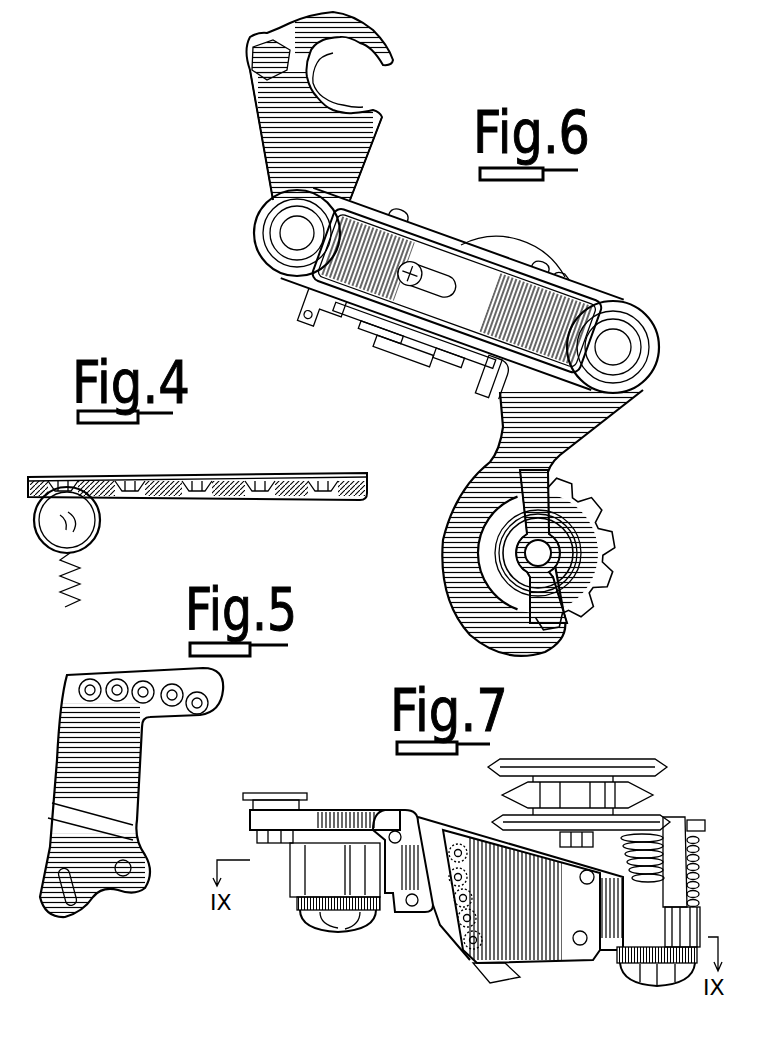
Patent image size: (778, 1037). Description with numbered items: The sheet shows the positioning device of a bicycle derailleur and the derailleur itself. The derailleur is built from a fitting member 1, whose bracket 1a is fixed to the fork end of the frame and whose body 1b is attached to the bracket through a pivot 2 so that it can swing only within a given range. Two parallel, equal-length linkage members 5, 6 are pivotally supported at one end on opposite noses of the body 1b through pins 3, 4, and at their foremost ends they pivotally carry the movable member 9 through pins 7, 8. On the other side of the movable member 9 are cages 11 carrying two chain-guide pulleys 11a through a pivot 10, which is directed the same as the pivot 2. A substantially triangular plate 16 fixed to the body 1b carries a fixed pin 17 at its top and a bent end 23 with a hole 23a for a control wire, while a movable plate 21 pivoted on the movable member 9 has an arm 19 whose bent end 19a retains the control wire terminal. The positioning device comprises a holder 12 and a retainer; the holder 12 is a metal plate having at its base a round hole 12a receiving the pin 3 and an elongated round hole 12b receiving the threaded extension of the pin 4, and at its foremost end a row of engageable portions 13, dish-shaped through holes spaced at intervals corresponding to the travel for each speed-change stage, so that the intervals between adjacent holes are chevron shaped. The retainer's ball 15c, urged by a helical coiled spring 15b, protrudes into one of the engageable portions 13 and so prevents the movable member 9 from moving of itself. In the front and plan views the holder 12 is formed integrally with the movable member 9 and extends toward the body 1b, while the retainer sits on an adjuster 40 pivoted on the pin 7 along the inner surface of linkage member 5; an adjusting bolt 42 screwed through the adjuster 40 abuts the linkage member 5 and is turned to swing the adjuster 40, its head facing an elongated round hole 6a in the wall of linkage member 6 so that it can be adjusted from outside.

In FIG. 6, the fitting member 1 is at (385, 125).
In FIG. 7, the fitting member 1 is at (247, 820).
In FIG. 6, the bracket 1a is at (268, 122).
In FIG. 7, the bracket 1a is at (277, 800).
In FIG. 6, the body 1b is at (362, 177).
In FIG. 7, the body 1b is at (300, 878).
In FIG. 6, the pivot 2 is at (268, 238).
In FIG. 7, the pivot 2 is at (333, 930).
In FIG. 6, the pin 3 is at (383, 207).
In FIG. 7, the pin 3 is at (393, 830).
In FIG. 6, the pin 4 is at (400, 210).
In FIG. 7, the pin 4 is at (410, 907).
In FIG. 6, the linkage member 5 is at (456, 291).
In FIG. 7, the linkage member 5 is at (430, 826).
In FIG. 6, the linkage member 6 is at (427, 260).
In FIG. 7, the linkage member 6 is at (437, 925).
In FIG. 6, the elongated round hole 6a is at (450, 283).
In FIG. 6, the pin 7 is at (540, 264).
In FIG. 7, the pin 7 is at (588, 885).
In FIG. 6, the pin 8 is at (567, 270).
In FIG. 7, the pin 8 is at (580, 945).
In FIG. 6, the movable member 9 is at (632, 322).
In FIG. 7, the movable member 9 is at (678, 975).
In FIG. 6, the pivot 10 is at (630, 380).
In FIG. 7, the pivot 10 is at (660, 985).
In FIG. 6, the cages 11 is at (577, 443).
In FIG. 7, the cages 11 is at (699, 822).
In FIG. 6, the chain-guide pulleys 11a is at (583, 527).
In FIG. 7, the chain-guide pulleys 11a is at (588, 790).
In FIG. 6, the holder 12 is at (500, 262).
In FIG. 4, the holder 12 is at (96, 477).
In FIG. 5, the holder 12 is at (230, 690).
In FIG. 7, the holder 12 is at (538, 950).
In FIG. 5, the round hole 12a is at (127, 875).
In FIG. 5, the elongated round hole 12b is at (73, 903).
In FIG. 4, the engageable portions 13 is at (137, 477).
In FIG. 5, the engageable portions 13 is at (196, 708).
In FIG. 7, the engageable portions 13 is at (473, 945).
In FIG. 4, the helical coiled spring 15b is at (82, 575).
In FIG. 4, the ball 15c is at (102, 524).
In FIG. 6, the triangular plate 16 is at (380, 332).
In FIG. 6, the fixed pin 17 is at (415, 355).
In FIG. 6, the arm 19 is at (470, 377).
In FIG. 6, the bent end 19a is at (475, 402).
In FIG. 6, the plate 21 is at (436, 355).
In FIG. 6, the bent end 23 is at (300, 303).
In FIG. 6, the hole 23a is at (310, 320).
In FIG. 6, the adjuster 40 is at (440, 297).
In FIG. 6, the adjusting bolt 42 is at (378, 340).